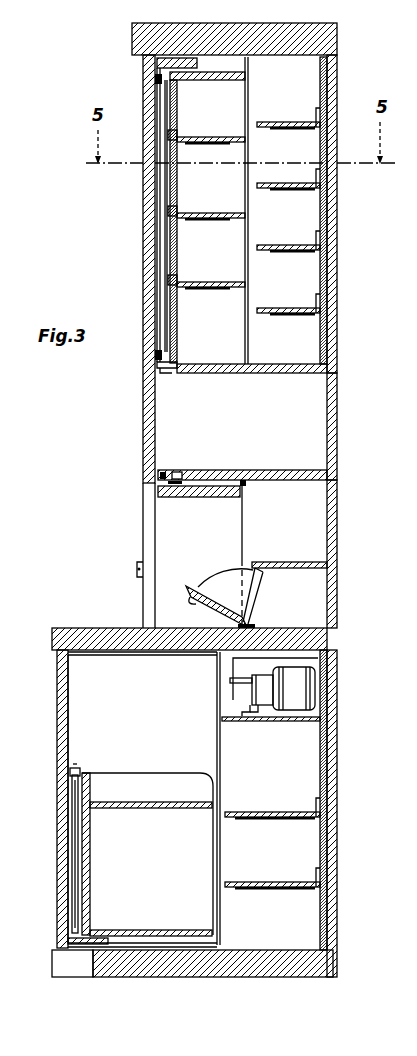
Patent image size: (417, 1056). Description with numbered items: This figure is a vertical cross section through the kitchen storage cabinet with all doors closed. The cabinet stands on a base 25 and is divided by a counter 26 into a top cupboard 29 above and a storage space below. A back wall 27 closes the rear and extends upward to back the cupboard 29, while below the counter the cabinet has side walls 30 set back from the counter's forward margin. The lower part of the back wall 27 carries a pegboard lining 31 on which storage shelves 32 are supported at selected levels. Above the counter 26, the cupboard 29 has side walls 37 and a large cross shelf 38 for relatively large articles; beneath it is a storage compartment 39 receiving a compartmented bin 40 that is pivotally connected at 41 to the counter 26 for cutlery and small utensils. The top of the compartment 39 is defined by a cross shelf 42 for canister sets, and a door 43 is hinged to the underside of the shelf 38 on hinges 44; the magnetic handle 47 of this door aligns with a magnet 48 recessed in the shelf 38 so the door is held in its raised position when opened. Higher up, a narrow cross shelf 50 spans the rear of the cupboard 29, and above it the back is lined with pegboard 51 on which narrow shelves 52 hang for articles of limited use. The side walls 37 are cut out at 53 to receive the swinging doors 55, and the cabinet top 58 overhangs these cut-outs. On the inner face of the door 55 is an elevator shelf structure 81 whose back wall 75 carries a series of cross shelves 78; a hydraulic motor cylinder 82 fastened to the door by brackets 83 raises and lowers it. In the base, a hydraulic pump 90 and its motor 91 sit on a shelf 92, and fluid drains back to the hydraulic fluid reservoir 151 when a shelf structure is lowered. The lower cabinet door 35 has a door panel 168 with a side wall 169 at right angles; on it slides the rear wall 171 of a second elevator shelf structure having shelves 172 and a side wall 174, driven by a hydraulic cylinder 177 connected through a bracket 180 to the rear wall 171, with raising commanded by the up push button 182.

The base 25 is at (122, 975).
The counter 26 is at (84, 628).
The back wall 27 is at (337, 446).
The top cupboard 29 is at (125, 290).
The side walls 30 is at (288, 922).
The pegboard lining 31 is at (322, 797).
The storage shelves 32 is at (268, 880).
The cabinet door 35 is at (57, 705).
The side walls 37 is at (310, 412).
The cross shelf 38 is at (243, 470).
The storage compartment 39 is at (308, 608).
The compartmented bin 40 is at (208, 583).
The pivotal connection 41 is at (250, 622).
The cross shelf 42 is at (302, 568).
The door 43 is at (214, 497).
The hinges 44 is at (245, 484).
The handle 47 is at (186, 470).
The magnet 48 is at (167, 470).
The cross shelf 50 is at (298, 373).
The pegboard lining 51 is at (326, 265).
The narrow shelves 52 is at (288, 245).
The cut-out 53 is at (246, 376).
The swinging doors 55 is at (143, 204).
The top 58 is at (146, 41).
The back wall 75 is at (178, 115).
The cross shelves 78 is at (226, 143).
The elevator shelf structure 81 is at (172, 378).
The hydraulic motor cylinder 82 is at (163, 225).
The brackets 83 is at (155, 79).
The hydraulic pump 90 is at (262, 712).
The motor 91 is at (320, 700).
The shelf 92 is at (282, 721).
The hydraulic fluid reservoir 151 is at (318, 660).
The door panel 168 is at (68, 745).
The side wall 169 is at (238, 940).
The rear wall 171 is at (92, 828).
The shelves 172 is at (186, 808).
The side wall 174 is at (130, 786).
The hydraulic cylinder 177 is at (78, 858).
The bracket 180 is at (80, 768).
The up push button 182 is at (137, 568).